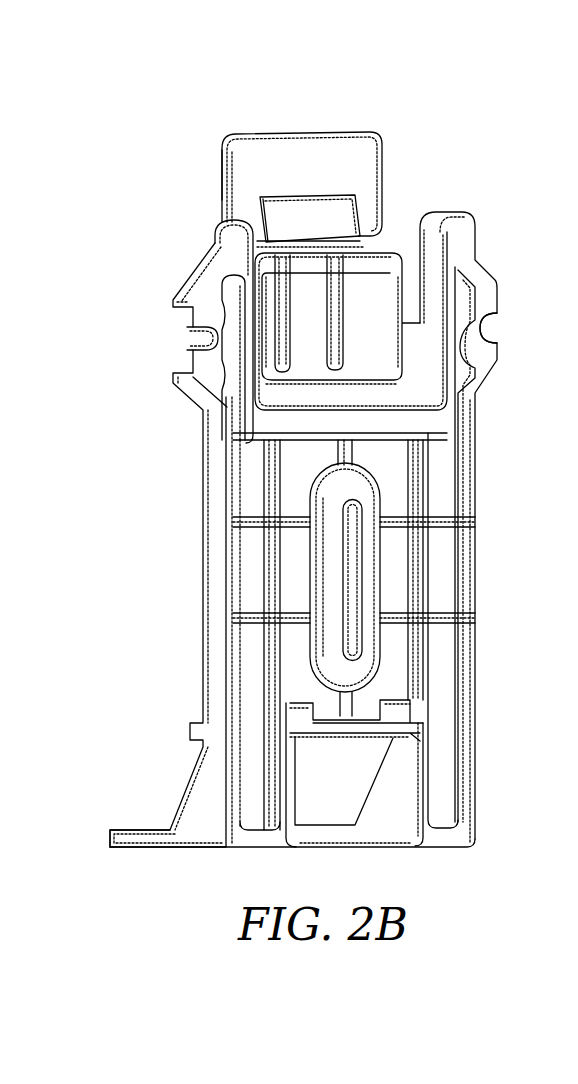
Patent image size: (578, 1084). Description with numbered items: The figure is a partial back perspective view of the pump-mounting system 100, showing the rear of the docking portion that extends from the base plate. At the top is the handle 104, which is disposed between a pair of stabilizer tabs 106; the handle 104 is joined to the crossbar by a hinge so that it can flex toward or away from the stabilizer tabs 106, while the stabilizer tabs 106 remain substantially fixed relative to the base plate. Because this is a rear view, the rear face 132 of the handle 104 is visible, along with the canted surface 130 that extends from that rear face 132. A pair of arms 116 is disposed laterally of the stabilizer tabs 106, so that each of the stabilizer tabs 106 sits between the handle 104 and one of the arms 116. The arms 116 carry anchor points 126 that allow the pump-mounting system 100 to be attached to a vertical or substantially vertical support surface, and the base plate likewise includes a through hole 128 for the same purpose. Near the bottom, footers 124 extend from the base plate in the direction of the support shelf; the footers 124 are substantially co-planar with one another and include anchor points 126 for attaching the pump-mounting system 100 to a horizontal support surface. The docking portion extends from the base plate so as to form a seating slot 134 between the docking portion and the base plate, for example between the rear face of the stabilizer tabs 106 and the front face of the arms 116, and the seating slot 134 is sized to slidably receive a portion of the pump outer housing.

The pump-mounting system 100 is at (142, 233).
The handle 104 is at (243, 172).
The stabilizer tabs 106 is at (372, 325).
The arms 116 is at (180, 287).
The footers 124 is at (192, 807).
The anchor points 126 is at (182, 338).
The through hole 128 is at (352, 580).
The canted surface 130 is at (333, 196).
The rear face 132 is at (303, 146).
The seating slot 134 is at (392, 244).